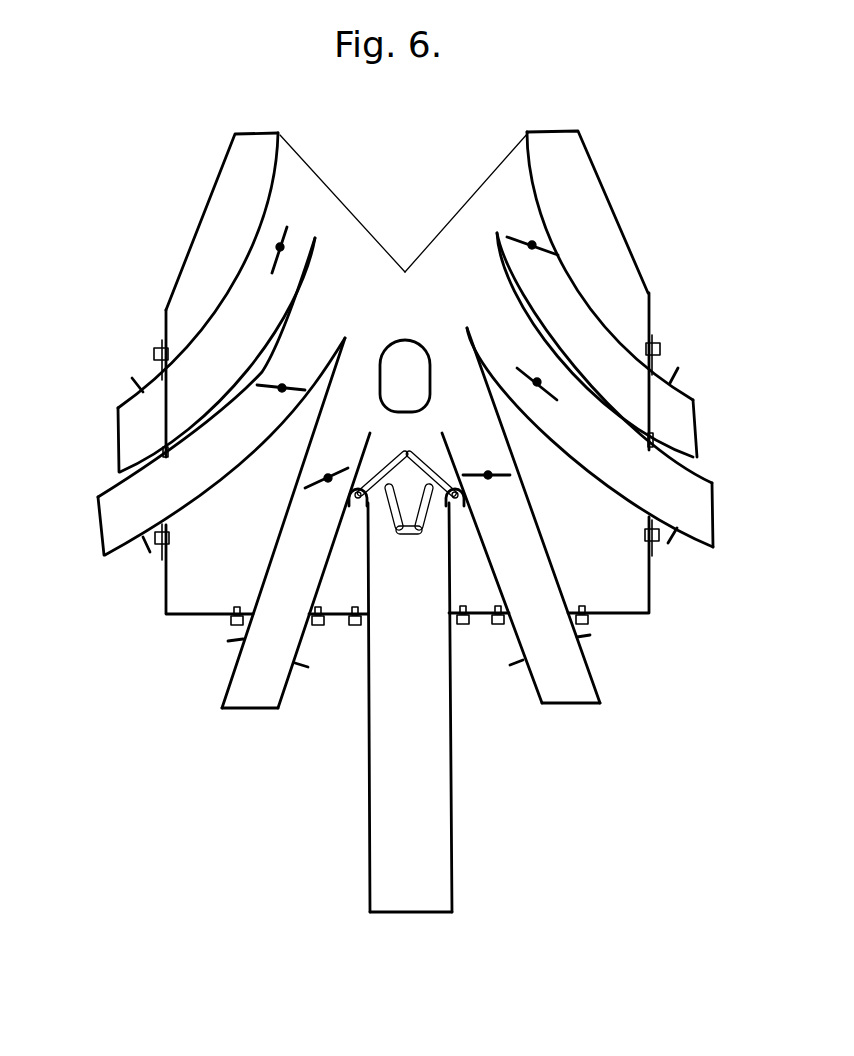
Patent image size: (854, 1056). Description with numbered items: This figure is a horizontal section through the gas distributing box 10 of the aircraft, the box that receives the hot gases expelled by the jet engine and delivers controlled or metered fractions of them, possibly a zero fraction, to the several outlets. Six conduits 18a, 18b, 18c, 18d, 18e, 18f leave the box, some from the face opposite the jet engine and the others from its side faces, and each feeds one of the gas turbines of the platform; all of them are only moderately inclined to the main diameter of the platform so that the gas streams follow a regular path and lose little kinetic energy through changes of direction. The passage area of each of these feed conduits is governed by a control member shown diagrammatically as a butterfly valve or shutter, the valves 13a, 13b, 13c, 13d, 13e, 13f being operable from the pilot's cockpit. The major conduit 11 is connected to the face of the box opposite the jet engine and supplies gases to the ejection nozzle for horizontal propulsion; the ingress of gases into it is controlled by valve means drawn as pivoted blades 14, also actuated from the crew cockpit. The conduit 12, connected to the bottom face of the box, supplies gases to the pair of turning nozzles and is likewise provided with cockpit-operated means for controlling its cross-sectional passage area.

The gas distributing box 10 is at (652, 311).
The conduit 11 is at (378, 799).
The conduit 12 is at (402, 353).
The butterfly valve 13a is at (527, 242).
The butterfly valve 13b is at (517, 368).
The butterfly valve 13c is at (477, 472).
The butterfly valve 13d is at (330, 470).
The butterfly valve 13e is at (292, 383).
The butterfly valve 13f is at (282, 243).
The pivoted blades 14 is at (425, 457).
The conduit 18a is at (688, 410).
The conduit 18b is at (706, 510).
The conduit 18c is at (577, 667).
The conduit 18d is at (245, 673).
The conduit 18e is at (116, 522).
The conduit 18f is at (128, 422).